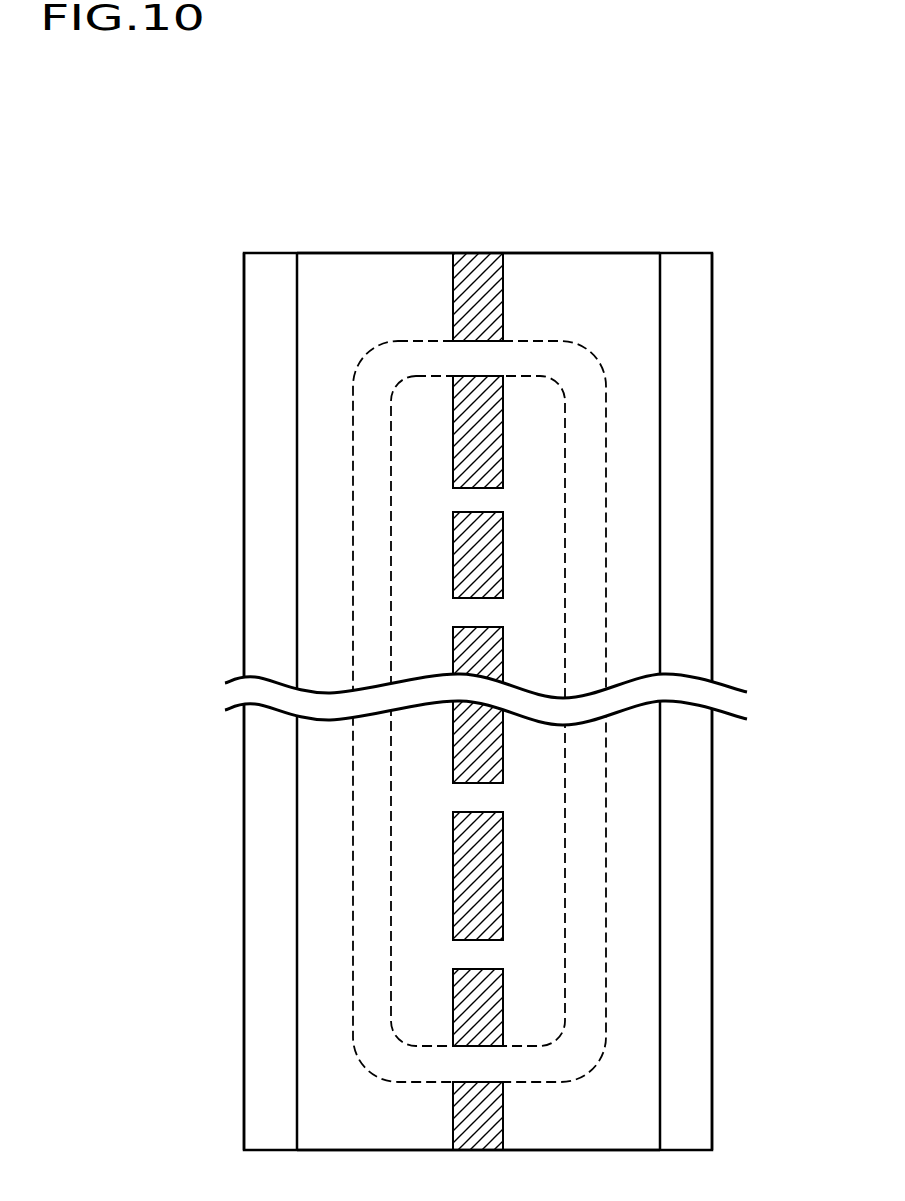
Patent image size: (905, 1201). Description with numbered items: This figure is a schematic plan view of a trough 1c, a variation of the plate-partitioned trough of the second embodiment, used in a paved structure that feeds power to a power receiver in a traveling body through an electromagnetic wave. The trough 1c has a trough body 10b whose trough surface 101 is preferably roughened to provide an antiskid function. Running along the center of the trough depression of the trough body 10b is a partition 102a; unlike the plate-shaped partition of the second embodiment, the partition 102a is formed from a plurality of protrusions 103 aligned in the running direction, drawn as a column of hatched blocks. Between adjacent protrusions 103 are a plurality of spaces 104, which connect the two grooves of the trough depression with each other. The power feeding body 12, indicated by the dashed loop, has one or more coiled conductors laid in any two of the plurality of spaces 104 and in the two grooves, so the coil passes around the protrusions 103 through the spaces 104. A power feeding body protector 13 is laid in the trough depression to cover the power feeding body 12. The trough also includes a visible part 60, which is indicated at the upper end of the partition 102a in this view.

The trough 1c is at (765, 240).
The trough body 10b is at (244, 417).
The trough surface 101 is at (257, 525).
The power feeding body protector 13 is at (638, 600).
The power feeding body 12 is at (370, 995).
The protrusion 103 is at (498, 313).
The space 104 is at (490, 358).
The partition 102a is at (478, 252).
The visible part 60 is at (485, 285).